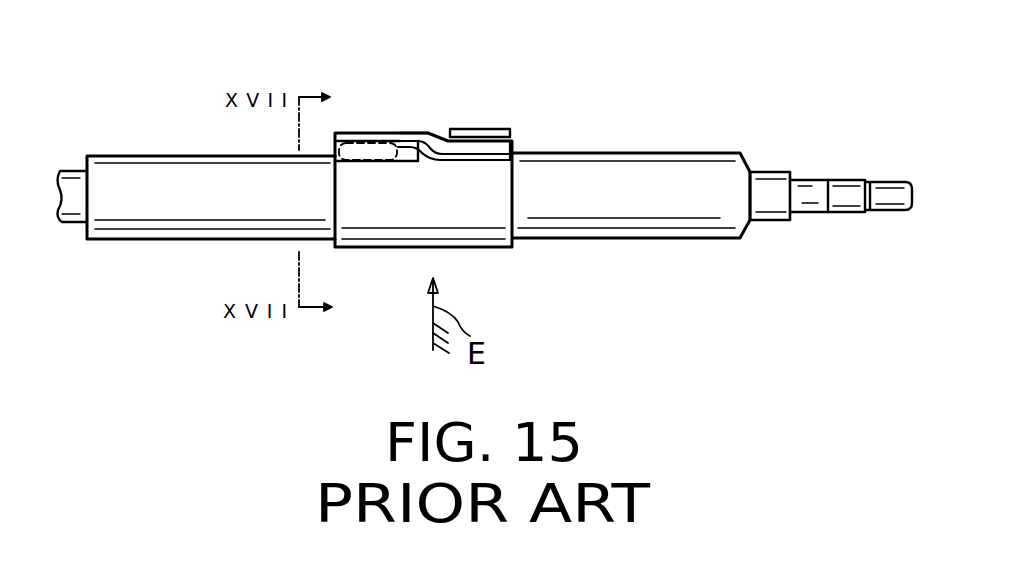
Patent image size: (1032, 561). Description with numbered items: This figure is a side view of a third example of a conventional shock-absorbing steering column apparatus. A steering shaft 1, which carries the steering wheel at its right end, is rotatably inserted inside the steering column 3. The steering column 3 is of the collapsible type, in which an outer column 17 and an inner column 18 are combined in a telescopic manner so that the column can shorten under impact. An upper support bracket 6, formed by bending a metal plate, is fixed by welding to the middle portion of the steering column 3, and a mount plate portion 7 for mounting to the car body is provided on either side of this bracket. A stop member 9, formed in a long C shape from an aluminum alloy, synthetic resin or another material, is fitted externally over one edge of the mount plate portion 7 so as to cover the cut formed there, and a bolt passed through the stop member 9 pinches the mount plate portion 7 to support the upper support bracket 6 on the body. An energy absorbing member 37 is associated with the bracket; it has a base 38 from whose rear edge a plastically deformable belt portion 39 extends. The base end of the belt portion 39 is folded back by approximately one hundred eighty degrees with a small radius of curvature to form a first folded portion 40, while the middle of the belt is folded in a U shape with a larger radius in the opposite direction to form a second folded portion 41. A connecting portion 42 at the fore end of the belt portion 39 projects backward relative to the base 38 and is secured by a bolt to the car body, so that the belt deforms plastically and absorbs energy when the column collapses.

The steering shaft 1 is at (817, 178).
The steering column 3 is at (162, 220).
The upper support bracket 6 is at (512, 247).
The mount plate portion 7 is at (433, 142).
The stop member 9 is at (482, 130).
The outer column 17 is at (682, 231).
The inner column 18 is at (73, 183).
The energy absorbing member 37 is at (439, 167).
The base 38 is at (372, 160).
The belt portion 39 is at (430, 160).
The first folded portion 40 is at (405, 133).
The second folded portion 41 is at (327, 140).
The connecting portion 42 is at (497, 172).